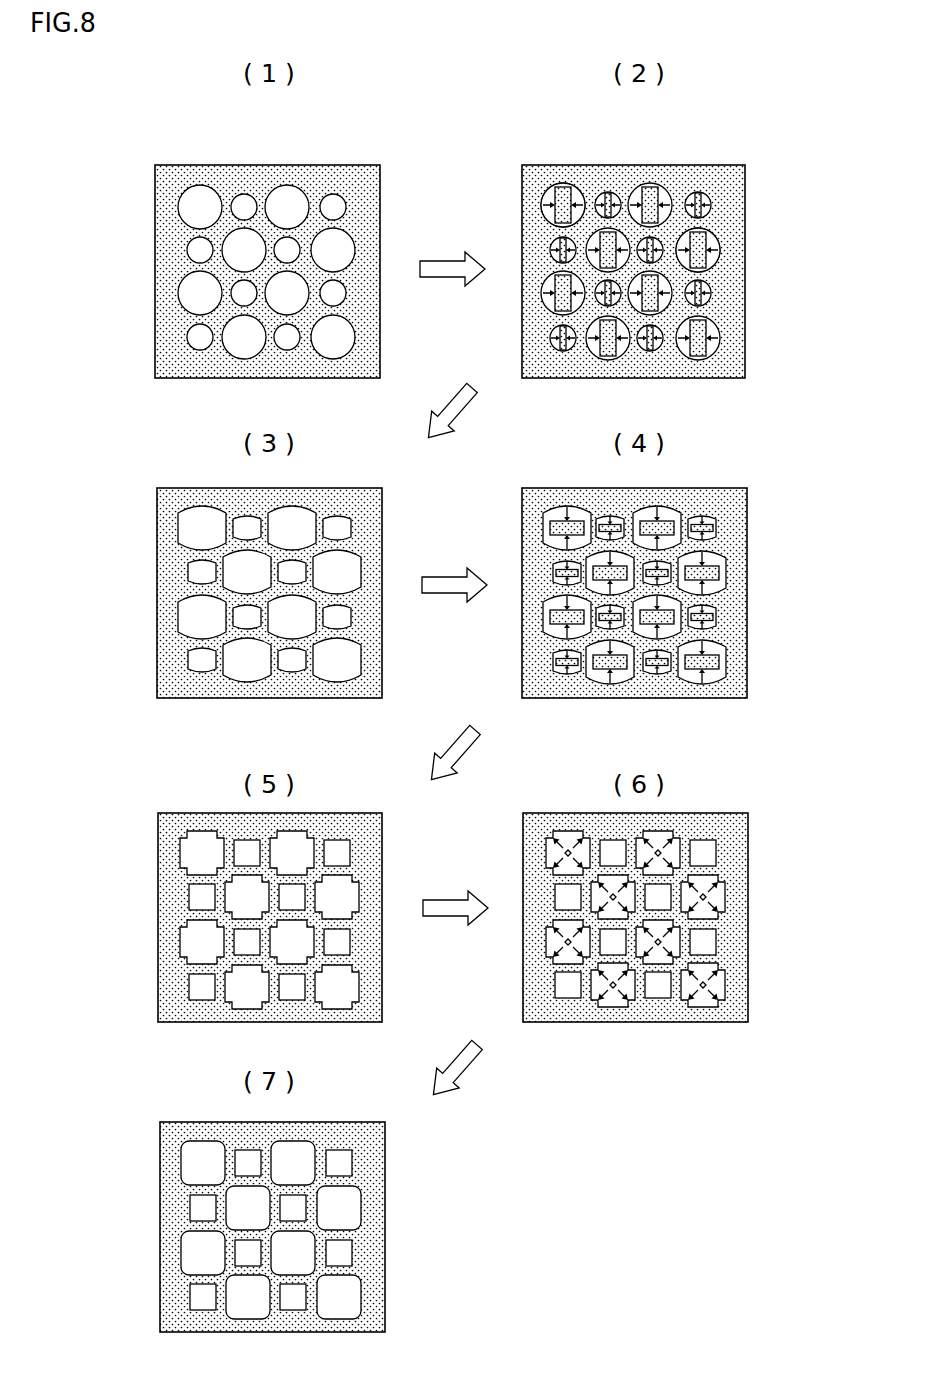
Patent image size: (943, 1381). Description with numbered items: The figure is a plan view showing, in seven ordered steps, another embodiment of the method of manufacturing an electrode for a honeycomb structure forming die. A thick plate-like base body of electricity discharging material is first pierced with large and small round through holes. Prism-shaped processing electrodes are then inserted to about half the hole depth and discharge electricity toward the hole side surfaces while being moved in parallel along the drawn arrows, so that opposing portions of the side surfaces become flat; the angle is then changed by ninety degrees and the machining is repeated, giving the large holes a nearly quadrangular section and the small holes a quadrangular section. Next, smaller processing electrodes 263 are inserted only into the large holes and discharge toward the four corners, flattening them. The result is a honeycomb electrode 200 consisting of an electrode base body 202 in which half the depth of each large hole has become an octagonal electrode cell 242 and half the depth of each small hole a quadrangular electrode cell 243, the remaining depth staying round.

The honeycomb electrode 200 is at (335, 1216).
The electrode base body 202 is at (386, 1188).
The octagonal electrode cell 242 is at (343, 1295).
The quadrangular electrode cell 243 is at (343, 1252).
The processing electrode 263 is at (707, 985).